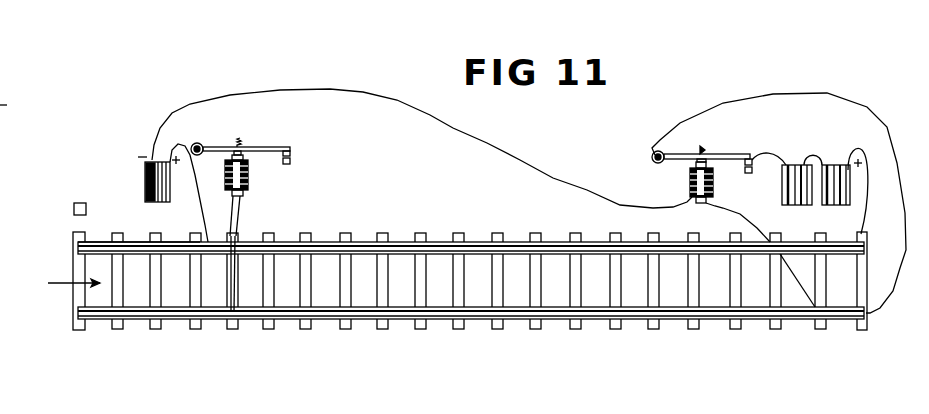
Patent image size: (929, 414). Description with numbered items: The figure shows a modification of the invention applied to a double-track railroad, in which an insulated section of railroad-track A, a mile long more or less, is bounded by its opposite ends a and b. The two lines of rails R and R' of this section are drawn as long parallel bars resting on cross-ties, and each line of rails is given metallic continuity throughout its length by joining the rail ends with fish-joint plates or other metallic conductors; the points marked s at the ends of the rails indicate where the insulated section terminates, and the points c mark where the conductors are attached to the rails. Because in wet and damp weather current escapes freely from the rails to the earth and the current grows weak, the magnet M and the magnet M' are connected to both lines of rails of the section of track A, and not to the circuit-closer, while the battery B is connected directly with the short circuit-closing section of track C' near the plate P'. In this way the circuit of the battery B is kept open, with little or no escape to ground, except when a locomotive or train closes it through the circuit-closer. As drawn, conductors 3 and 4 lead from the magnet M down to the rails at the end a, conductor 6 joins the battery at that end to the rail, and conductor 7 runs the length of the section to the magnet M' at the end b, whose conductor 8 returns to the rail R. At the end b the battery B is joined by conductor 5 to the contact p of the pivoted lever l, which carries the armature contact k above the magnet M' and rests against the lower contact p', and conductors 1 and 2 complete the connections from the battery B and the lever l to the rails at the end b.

The wire from battery B to track 1 is at (862, 191).
The wire from relay lever to track 2 is at (784, 203).
The wire from magnet M to armature 3 is at (243, 216).
The wire from magnet M to armature 4 is at (226, 216).
The wire from contact p to battery B 5 is at (769, 154).
The wire from battery B² to track 6 is at (189, 193).
The wire from battery B² to magnet M' 7 is at (422, 148).
The wire from magnet M' to track 8 is at (760, 255).
The insulated section of railroad-track A is at (470, 281).
The rail R is at (471, 240).
The rail R' is at (471, 320).
The rail joint / insulation s is at (468, 280).
The end of section a is at (239, 274).
The end of section b is at (874, 270).
The connection point c is at (554, 318).
The section of track C' is at (178, 273).
The plate P' is at (80, 200).
The battery B is at (822, 167).
The magnet M is at (245, 175).
The magnet M' is at (687, 182).
The lever l is at (470, 148).
The armature contact k is at (473, 145).
The contact p is at (521, 151).
The contact p' is at (521, 170).